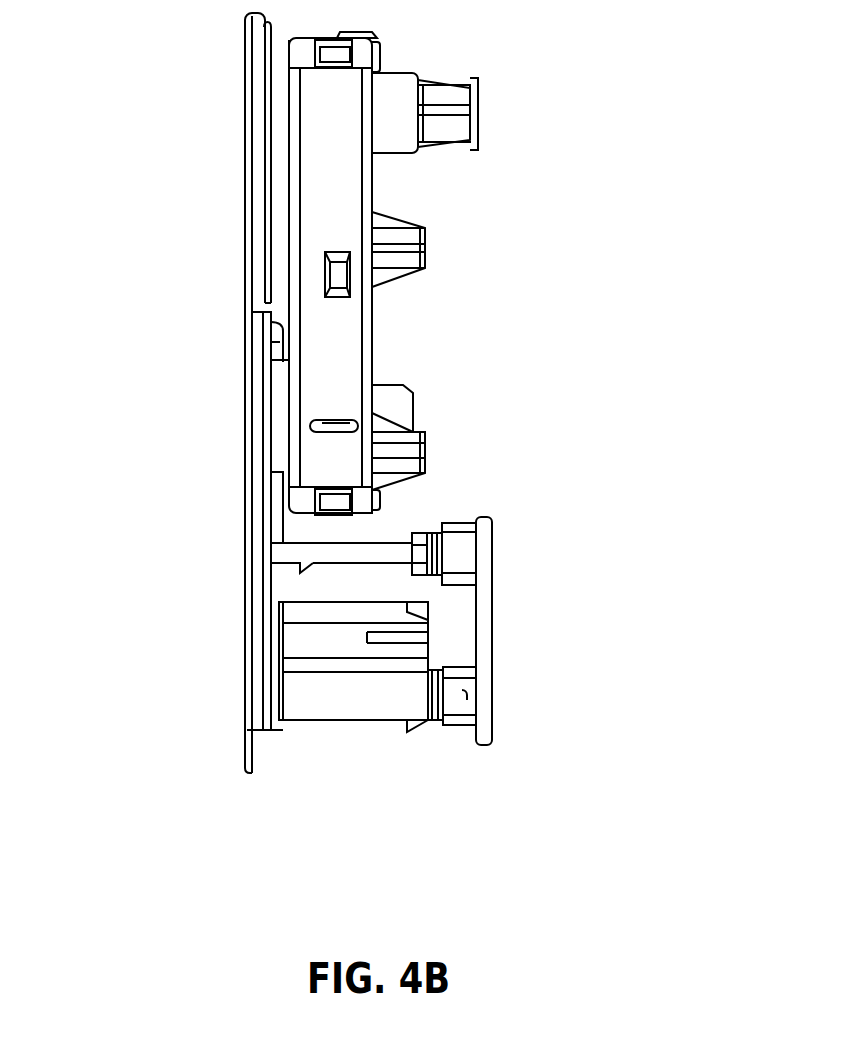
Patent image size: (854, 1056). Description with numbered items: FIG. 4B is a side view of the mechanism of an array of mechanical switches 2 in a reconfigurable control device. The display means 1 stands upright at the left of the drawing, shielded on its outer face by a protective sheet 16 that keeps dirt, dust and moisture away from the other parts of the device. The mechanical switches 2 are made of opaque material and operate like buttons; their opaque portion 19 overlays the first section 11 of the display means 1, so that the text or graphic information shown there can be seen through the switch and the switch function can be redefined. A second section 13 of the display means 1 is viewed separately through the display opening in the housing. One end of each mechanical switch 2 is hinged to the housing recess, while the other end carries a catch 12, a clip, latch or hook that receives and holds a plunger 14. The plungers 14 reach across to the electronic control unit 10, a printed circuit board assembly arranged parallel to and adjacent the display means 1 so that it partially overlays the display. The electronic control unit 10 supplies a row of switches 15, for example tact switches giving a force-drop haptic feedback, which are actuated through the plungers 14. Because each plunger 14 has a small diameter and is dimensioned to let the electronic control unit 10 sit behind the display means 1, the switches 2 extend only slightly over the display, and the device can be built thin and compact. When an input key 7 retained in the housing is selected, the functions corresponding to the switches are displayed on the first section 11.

The display means 1 is at (356, 331).
The array of mechanical switches 2 is at (228, 506).
The input key 7 is at (355, 680).
The electronic control unit 10 is at (515, 642).
The first section 11 is at (279, 386).
The catch 12 is at (261, 549).
The second section 13 is at (280, 165).
The plunger 14 is at (380, 545).
The switches 15 is at (461, 554).
The protective sheet 16 is at (226, 101).
The opaque portion 19 is at (228, 412).